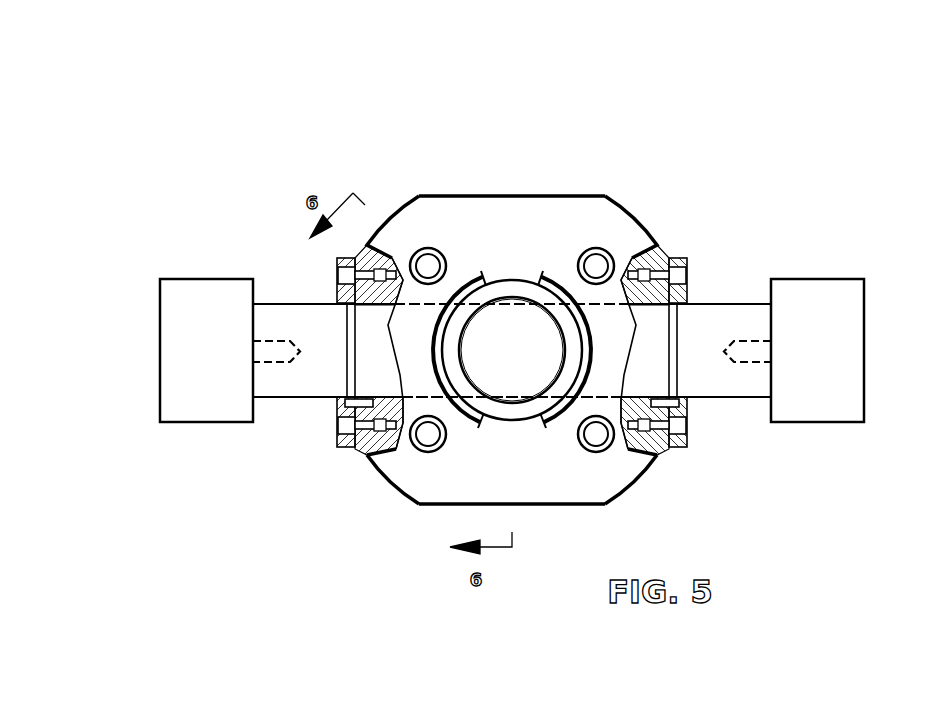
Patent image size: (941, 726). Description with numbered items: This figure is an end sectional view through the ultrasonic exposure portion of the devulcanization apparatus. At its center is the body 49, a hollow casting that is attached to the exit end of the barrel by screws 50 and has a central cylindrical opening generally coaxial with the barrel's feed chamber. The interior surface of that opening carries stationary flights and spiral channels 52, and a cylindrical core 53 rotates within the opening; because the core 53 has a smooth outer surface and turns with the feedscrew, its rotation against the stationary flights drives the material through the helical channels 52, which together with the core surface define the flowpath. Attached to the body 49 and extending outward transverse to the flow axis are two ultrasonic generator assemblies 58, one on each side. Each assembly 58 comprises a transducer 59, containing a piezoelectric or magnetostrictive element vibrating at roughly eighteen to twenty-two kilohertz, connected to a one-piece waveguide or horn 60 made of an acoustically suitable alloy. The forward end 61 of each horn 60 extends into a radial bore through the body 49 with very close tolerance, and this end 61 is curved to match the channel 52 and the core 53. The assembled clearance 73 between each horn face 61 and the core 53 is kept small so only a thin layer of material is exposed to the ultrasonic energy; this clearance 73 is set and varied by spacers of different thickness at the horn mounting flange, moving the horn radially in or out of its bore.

The body 49 is at (558, 212).
The screws 50 is at (437, 273).
The channels 52 is at (467, 420).
The core 53 is at (520, 337).
The ultrasonic generator assembly 58 is at (265, 259).
The transducer 59 is at (203, 413).
The horn 60 is at (298, 378).
The forward end 61 is at (578, 349).
The clearance 73 is at (510, 308).